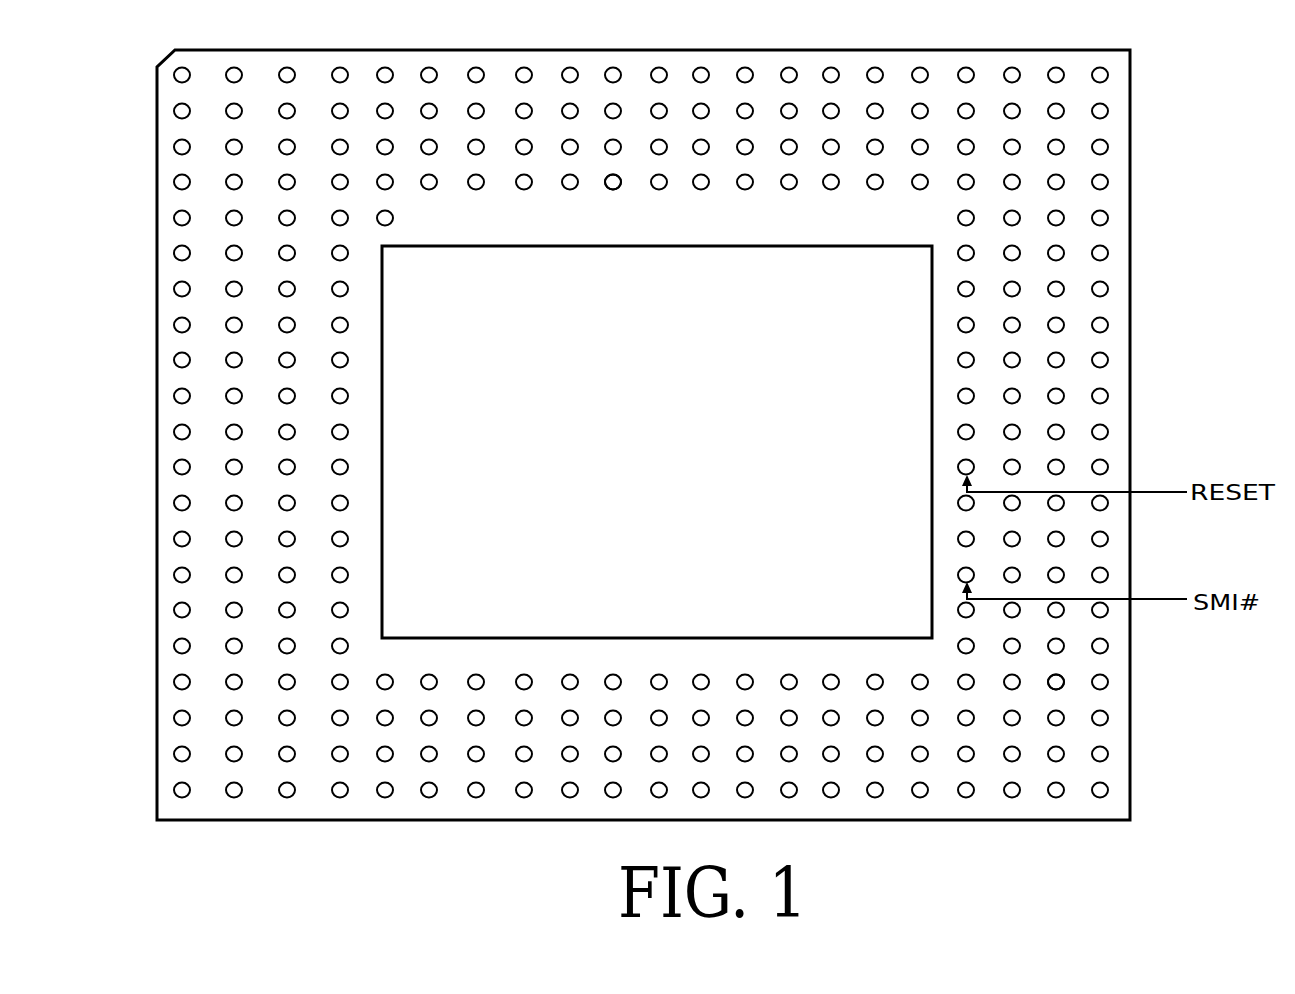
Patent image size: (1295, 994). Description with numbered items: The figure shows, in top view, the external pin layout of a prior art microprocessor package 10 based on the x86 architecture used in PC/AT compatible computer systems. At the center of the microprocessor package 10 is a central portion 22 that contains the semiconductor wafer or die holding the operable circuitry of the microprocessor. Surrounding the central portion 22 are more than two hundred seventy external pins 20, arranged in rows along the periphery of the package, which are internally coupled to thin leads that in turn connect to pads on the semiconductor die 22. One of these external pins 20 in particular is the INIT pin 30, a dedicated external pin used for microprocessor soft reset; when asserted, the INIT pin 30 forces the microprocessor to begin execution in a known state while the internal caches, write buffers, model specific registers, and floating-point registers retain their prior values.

The microprocessor package 10 is at (168, 54).
The external pins 20 is at (613, 190).
The central portion 22 is at (657, 442).
The INIT pin 30 is at (1056, 690).